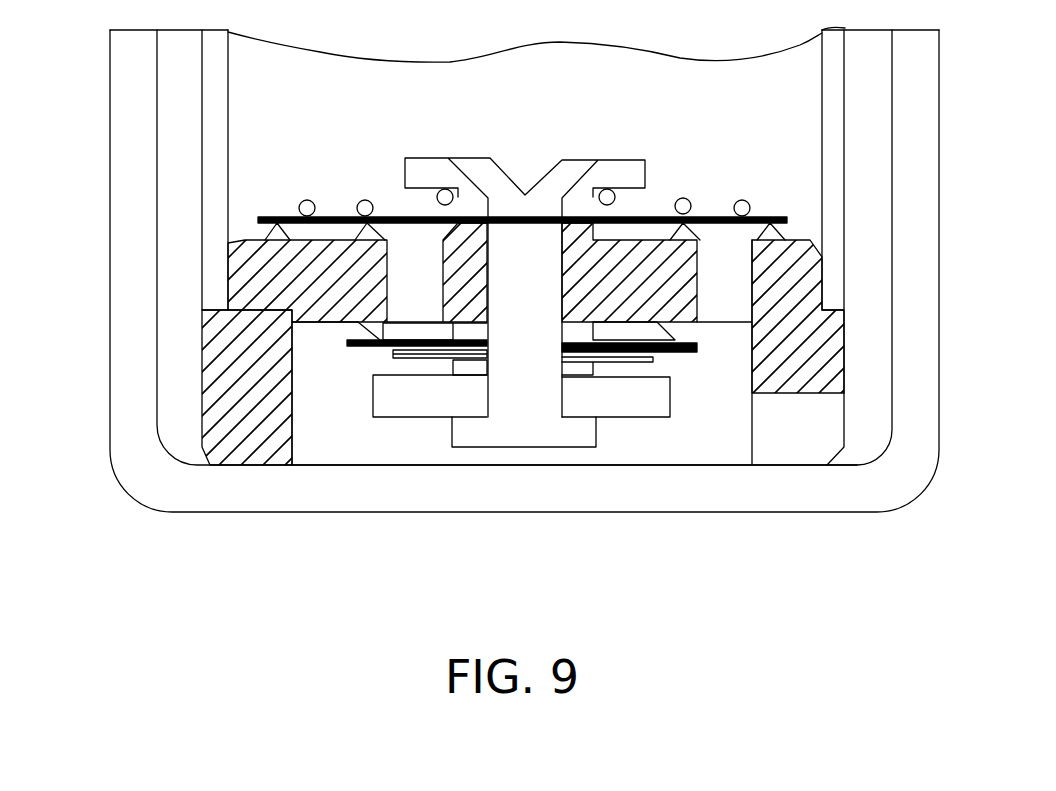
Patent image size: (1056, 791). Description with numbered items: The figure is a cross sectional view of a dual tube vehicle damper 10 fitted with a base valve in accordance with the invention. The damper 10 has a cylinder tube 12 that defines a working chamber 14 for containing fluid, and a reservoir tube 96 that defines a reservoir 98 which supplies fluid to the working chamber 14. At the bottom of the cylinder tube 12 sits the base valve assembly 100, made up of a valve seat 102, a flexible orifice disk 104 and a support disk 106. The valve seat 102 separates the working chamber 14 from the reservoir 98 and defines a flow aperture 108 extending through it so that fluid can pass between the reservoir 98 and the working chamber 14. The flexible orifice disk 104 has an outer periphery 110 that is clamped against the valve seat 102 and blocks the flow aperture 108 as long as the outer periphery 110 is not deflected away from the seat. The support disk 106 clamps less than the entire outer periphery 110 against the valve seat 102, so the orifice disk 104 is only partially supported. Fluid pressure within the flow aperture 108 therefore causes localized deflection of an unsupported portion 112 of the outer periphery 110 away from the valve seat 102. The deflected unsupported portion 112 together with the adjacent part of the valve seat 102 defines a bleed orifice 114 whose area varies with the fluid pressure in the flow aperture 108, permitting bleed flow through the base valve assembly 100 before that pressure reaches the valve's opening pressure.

The dual tube vehicle damper 10 is at (948, 84).
The cylinder tube 12 is at (845, 180).
The working chamber 14 is at (505, 107).
The reservoir tube 96 is at (940, 232).
The reservoir 98 is at (860, 293).
The base valve assembly 100 is at (727, 410).
The valve seat 102 is at (458, 328).
The flexible orifice disk 104 is at (690, 348).
The support disk 106 is at (664, 352).
The flow aperture 108 is at (405, 282).
The outer periphery 110 is at (680, 340).
The unsupported portion 112 is at (360, 325).
The bleed orifice 114 is at (363, 333).